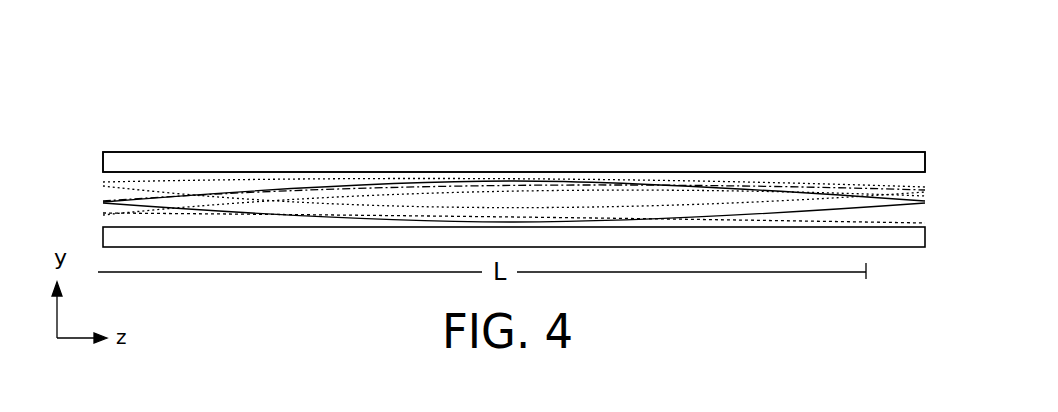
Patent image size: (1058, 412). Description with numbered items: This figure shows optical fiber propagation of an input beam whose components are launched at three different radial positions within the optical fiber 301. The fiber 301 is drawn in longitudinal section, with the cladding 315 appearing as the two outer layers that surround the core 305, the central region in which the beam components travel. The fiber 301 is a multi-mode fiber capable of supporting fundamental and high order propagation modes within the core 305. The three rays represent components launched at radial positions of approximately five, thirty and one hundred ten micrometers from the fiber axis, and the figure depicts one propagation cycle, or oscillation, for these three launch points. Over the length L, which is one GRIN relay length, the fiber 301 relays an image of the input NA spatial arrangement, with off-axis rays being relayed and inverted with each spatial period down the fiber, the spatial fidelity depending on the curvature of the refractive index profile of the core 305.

The optical fiber 301 is at (251, 102).
The cladding 315 is at (855, 163).
The core 305 is at (496, 203).